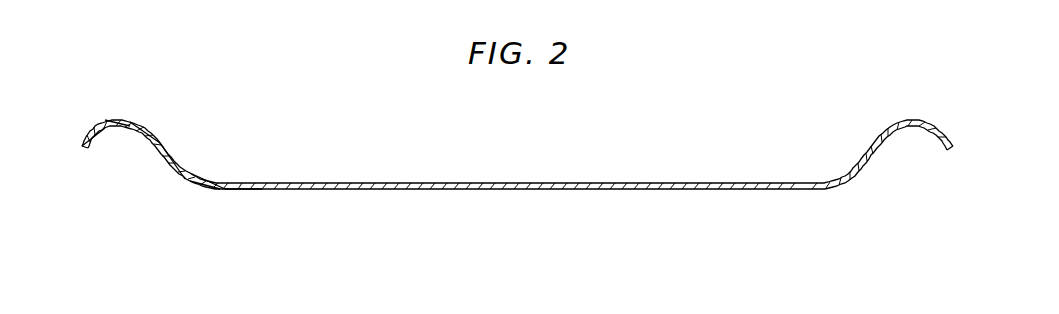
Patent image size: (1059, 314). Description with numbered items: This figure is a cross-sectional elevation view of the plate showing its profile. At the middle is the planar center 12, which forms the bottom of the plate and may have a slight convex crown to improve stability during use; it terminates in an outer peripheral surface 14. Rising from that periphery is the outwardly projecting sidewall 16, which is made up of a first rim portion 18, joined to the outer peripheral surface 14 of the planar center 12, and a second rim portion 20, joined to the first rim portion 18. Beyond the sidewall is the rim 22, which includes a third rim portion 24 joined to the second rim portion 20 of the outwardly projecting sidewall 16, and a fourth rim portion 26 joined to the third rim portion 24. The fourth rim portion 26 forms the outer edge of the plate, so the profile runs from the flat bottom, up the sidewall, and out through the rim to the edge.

The planar center 12 is at (412, 183).
The outer peripheral surface 14 is at (230, 183).
The outwardly projecting sidewall 16 is at (202, 150).
The first rim portion 18 is at (190, 177).
The second rim portion 20 is at (173, 140).
The rim 22 is at (132, 113).
The third rim portion 24 is at (145, 123).
The fourth rim portion 26 is at (115, 119).